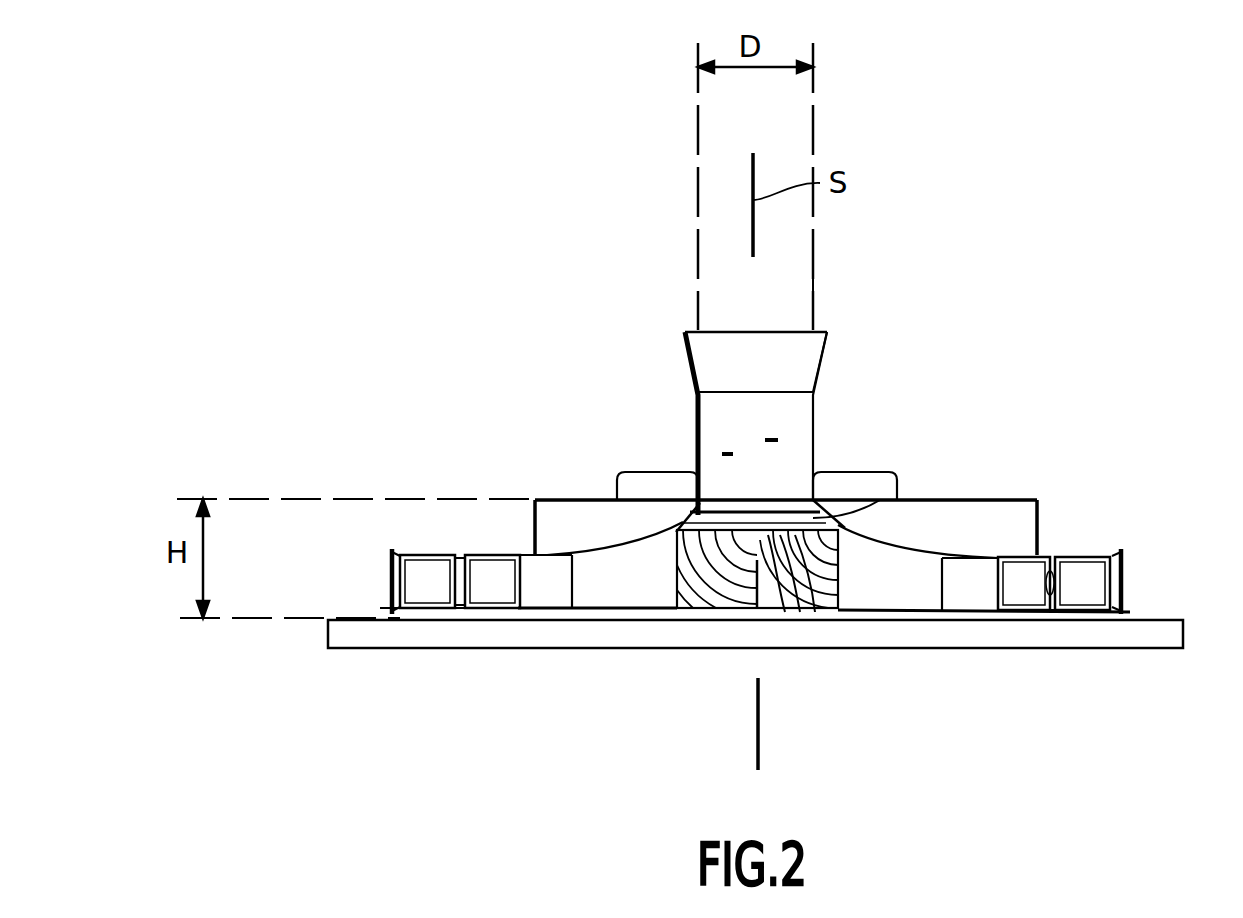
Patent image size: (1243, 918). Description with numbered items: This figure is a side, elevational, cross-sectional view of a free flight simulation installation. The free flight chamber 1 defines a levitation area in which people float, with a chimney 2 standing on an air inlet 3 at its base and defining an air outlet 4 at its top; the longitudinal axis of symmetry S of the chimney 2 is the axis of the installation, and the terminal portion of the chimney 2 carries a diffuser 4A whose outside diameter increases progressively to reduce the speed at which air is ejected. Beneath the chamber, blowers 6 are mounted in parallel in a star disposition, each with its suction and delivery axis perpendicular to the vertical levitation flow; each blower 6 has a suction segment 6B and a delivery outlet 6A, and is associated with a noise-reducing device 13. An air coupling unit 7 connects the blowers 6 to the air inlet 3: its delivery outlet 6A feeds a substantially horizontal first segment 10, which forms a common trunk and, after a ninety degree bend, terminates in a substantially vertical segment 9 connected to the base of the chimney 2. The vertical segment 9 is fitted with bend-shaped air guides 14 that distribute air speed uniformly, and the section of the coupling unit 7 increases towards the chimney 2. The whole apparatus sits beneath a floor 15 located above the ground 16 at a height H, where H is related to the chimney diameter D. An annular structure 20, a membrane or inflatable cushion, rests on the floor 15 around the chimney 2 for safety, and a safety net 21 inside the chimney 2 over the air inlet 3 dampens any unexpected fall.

The free flight chamber 1 is at (832, 388).
The chimney 2 is at (697, 400).
The air inlet 3 is at (880, 500).
The air outlet 4 is at (813, 330).
The diffuser 4A is at (822, 340).
The blower 6 is at (485, 582).
The delivery outlet 6A is at (988, 590).
The suction segment 6B is at (1130, 588).
The air coupling unit 7 is at (597, 632).
The vertical segment 9 is at (717, 598).
The first segment 10 is at (632, 600).
The noise-reducing device 13 is at (420, 582).
The air guides 14 is at (785, 612).
The floor 15 is at (562, 498).
The ground 16 is at (352, 640).
The annular structure 20 is at (857, 487).
The safety net 21 is at (738, 500).